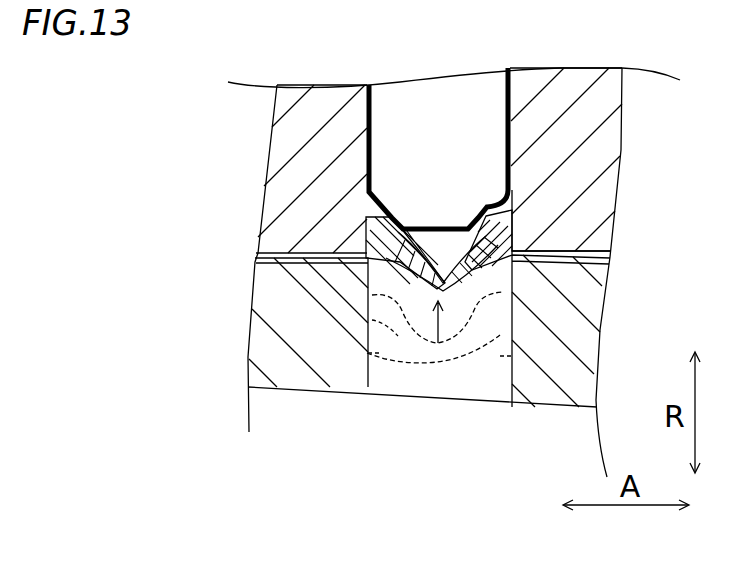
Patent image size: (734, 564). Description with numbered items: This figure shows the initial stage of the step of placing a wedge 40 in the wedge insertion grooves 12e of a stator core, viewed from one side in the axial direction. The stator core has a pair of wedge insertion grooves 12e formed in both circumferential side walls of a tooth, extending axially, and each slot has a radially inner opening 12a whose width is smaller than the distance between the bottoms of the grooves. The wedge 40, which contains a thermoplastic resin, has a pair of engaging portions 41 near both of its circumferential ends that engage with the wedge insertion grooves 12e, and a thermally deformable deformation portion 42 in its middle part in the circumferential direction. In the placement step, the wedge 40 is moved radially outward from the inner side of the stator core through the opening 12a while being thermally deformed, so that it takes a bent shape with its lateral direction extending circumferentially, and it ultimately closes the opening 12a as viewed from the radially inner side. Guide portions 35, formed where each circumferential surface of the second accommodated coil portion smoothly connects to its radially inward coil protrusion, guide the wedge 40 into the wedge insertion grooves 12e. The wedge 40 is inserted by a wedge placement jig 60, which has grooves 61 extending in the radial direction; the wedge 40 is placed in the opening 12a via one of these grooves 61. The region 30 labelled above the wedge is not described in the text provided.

The cavity 30 is at (435, 160).
The guide portion 35 is at (367, 192).
The wedge insertion groove 12e is at (362, 212).
The opening 12a is at (520, 231).
The engaging portion 41 is at (357, 226).
The deformation portion 42 is at (478, 291).
The wedge 40 is at (384, 285).
The wedge placement jig 60 is at (248, 356).
The groove 61 is at (368, 353).